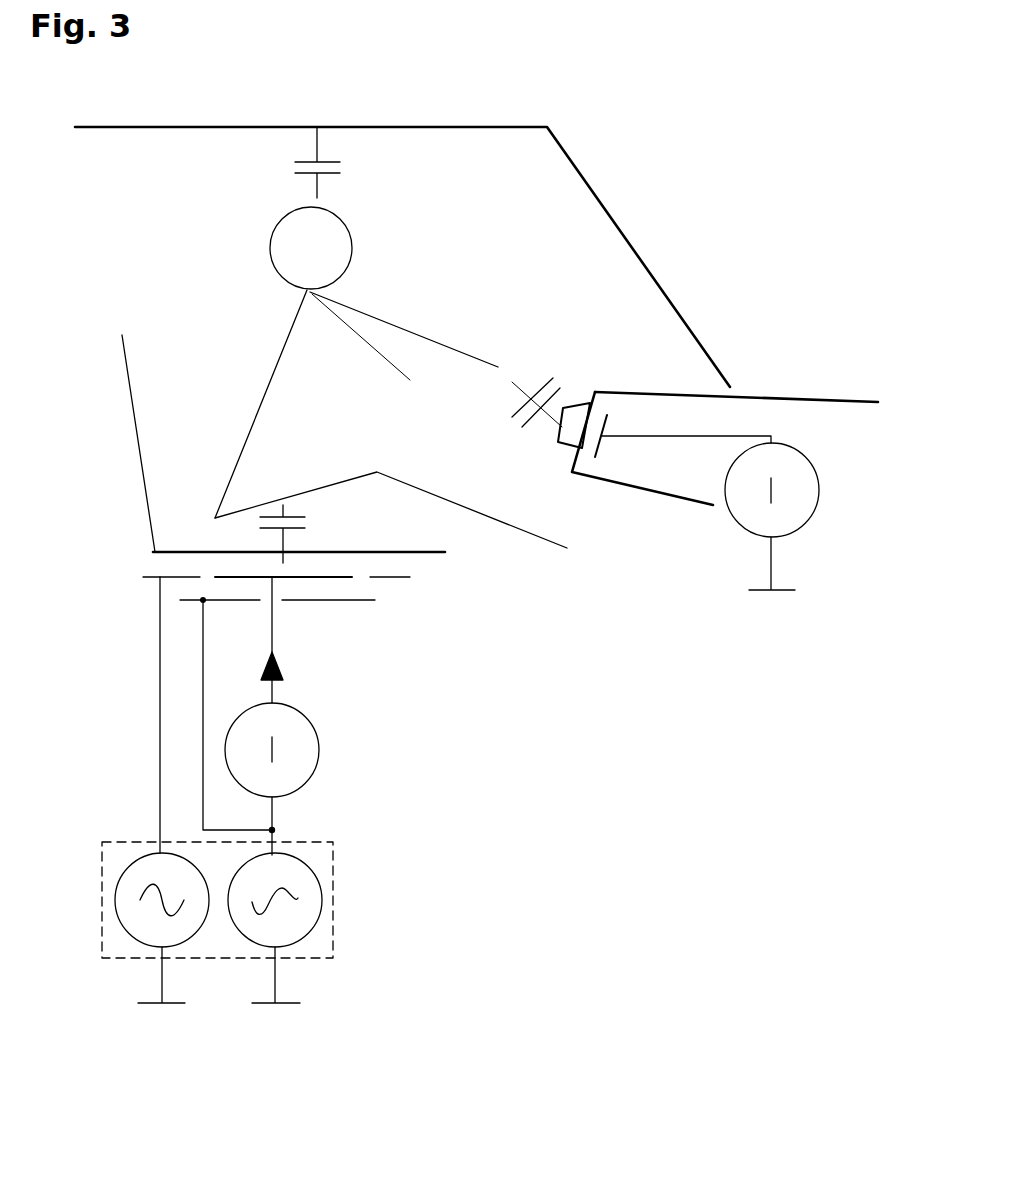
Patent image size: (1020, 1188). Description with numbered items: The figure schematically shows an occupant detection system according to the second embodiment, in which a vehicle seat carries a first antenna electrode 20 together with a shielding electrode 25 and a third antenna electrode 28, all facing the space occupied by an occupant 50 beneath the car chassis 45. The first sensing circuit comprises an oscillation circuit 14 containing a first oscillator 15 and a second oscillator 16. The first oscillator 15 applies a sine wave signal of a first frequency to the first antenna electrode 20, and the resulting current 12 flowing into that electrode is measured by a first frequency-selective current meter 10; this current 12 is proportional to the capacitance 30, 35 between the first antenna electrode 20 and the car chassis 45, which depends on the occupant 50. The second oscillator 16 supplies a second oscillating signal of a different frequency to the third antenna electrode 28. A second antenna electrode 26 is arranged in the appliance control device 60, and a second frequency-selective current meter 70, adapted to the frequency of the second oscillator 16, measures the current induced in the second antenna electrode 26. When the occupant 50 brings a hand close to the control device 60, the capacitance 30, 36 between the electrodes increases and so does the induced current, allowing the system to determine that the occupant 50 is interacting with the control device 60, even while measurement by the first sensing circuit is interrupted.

The first frequency-selective current meter 10 is at (313, 773).
The current 12 is at (282, 676).
The oscillation circuit 14 is at (333, 862).
The first oscillator 15 is at (320, 922).
The second oscillator 16 is at (114, 926).
The first antenna electrode 20 is at (335, 575).
The shielding electrode 25 is at (365, 603).
The second antenna electrode 26 is at (607, 462).
The third antenna electrode 28 is at (143, 578).
The capacitance 30 is at (307, 506).
The capacitance 35 is at (298, 181).
The capacitance 36 is at (559, 377).
The car chassis 45 is at (557, 141).
The occupant 50 is at (322, 297).
The appliance control device 60 is at (555, 450).
The second frequency-selective current meter 70 is at (796, 444).